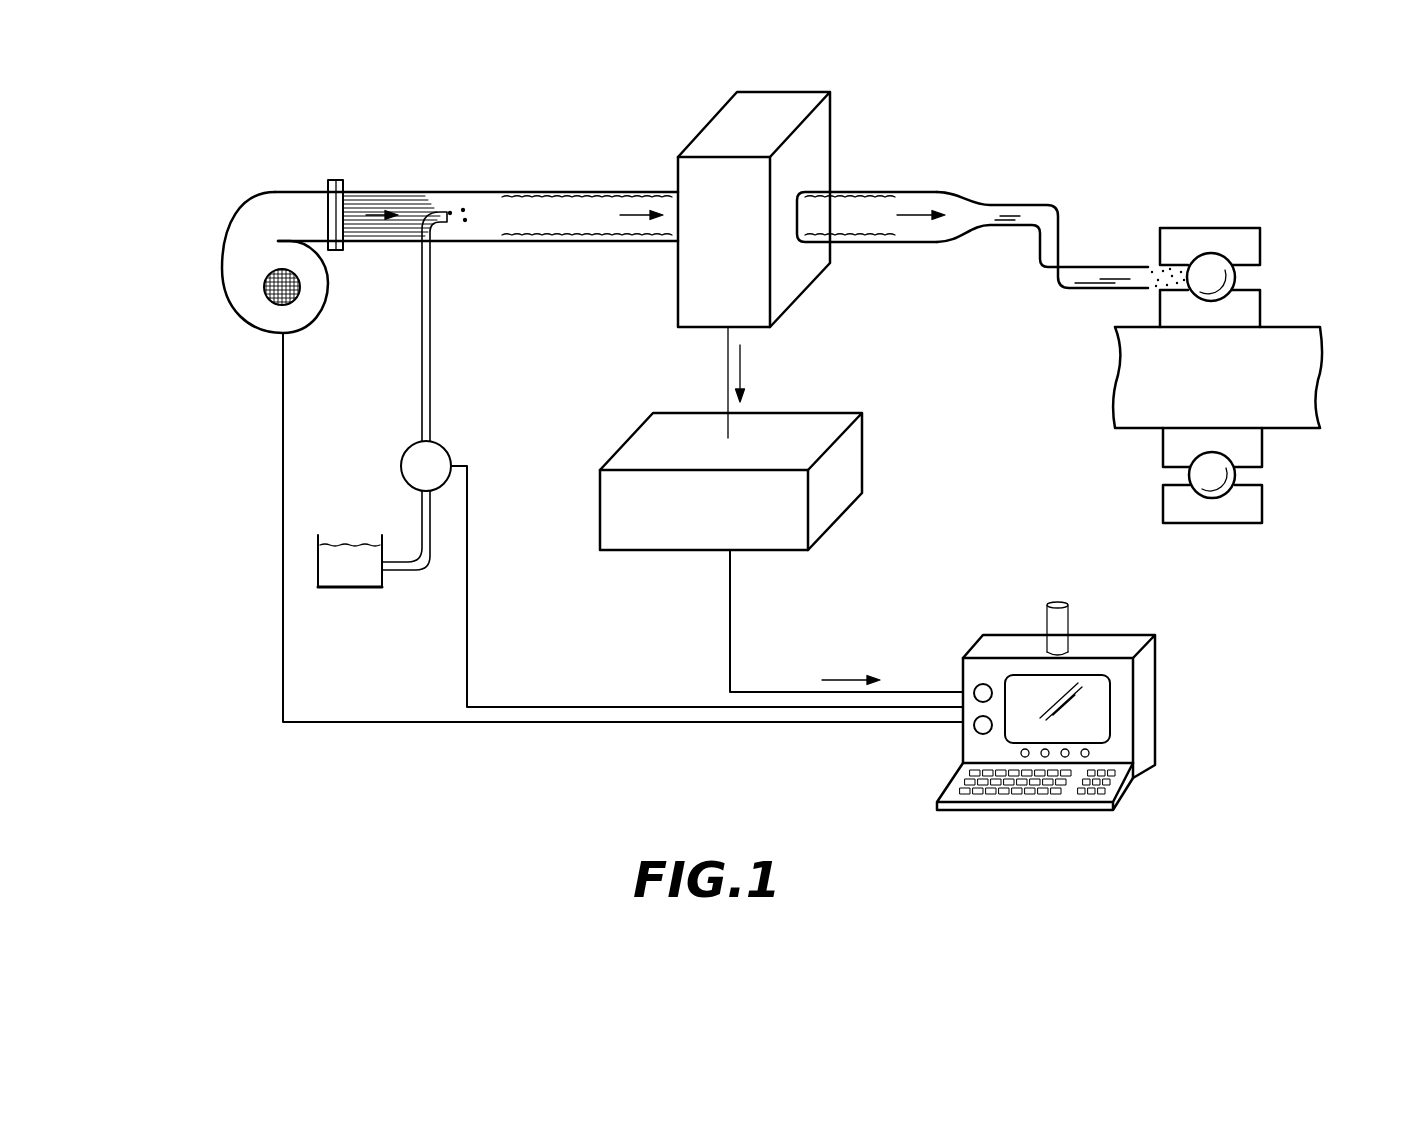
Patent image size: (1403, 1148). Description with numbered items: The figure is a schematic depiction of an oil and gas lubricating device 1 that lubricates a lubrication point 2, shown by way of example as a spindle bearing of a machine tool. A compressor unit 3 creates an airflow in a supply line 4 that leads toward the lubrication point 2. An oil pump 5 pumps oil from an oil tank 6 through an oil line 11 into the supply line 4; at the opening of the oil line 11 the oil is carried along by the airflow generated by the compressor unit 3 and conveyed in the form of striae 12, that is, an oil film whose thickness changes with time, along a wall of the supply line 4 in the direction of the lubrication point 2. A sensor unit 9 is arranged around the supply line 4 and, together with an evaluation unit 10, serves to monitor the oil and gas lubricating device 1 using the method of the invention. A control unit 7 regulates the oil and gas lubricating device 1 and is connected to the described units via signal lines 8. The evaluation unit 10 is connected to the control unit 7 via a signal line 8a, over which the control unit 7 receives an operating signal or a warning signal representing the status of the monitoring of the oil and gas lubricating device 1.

The oil and gas lubricating device 1 is at (447, 773).
The lubrication point 2 is at (1282, 305).
The compressor unit 3 is at (228, 198).
The supply line 4 is at (440, 185).
The oil pump 5 is at (419, 481).
The oil tank 6 is at (355, 590).
The control unit 7 is at (1172, 703).
The signal lines 8 is at (283, 658).
The signal line 8a is at (731, 658).
The sensor unit 9 is at (845, 132).
The evaluation unit 10 is at (873, 500).
The oil line 11 is at (432, 337).
The striae 12 is at (587, 185).